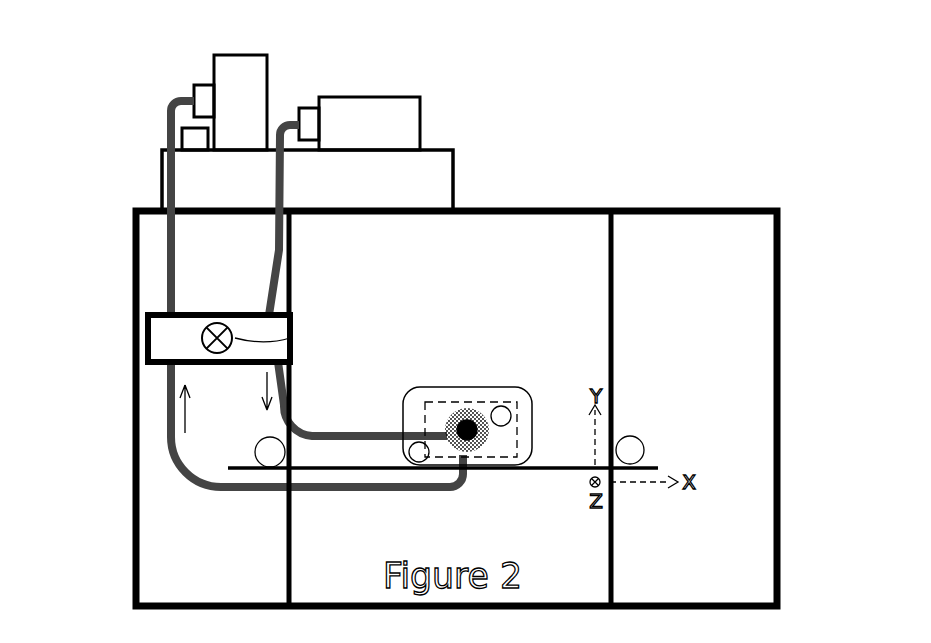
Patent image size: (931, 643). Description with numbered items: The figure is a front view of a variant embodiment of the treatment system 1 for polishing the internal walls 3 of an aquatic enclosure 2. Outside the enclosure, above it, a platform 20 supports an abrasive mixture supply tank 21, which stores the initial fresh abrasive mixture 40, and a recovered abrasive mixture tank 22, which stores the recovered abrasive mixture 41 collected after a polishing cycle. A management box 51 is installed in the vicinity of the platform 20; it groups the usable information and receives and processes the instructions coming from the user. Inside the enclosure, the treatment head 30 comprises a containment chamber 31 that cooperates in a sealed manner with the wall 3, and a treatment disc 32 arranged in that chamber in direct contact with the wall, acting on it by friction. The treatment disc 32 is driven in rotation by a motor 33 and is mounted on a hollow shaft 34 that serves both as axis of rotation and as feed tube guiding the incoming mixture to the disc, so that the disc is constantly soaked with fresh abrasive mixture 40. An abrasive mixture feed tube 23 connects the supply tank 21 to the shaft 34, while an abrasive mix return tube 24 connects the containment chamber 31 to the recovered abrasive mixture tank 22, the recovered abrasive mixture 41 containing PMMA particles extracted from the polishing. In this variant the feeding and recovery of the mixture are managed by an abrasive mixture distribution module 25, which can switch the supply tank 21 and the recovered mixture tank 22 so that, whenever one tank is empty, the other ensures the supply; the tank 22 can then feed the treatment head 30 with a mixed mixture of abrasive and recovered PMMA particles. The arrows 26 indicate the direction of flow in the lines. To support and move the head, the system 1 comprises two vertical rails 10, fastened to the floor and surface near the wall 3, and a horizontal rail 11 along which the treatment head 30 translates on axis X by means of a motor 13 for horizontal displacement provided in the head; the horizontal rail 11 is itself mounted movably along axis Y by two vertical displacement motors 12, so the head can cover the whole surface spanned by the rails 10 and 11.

The treatment system 1 is at (115, 198).
The aquatic enclosure 2 is at (768, 197).
The internal wall 3 is at (514, 283).
The vertical rail 10 is at (614, 312).
The horizontal rail 11 is at (543, 472).
The vertical displacement motor 12 is at (270, 452).
The motor for horizontal displacement 13 is at (419, 452).
The platform 20 is at (417, 183).
The abrasive mixture supply tank 21 is at (373, 123).
The recovered abrasive mixture tank 22 is at (240, 98).
The abrasive mixture feed tube 23 is at (358, 280).
The abrasive mix return tube 24 is at (256, 294).
The abrasive mixture distribution module 25 is at (292, 328).
The flow direction 26 is at (263, 395).
The treatment head 30 is at (393, 422).
The containment chamber 31 is at (438, 415).
The treatment disc 32 is at (465, 418).
The motor of the treatment disc 33 is at (502, 407).
The hollow shaft 34 is at (482, 430).
The fresh abrasive mixture 40 is at (278, 254).
The recovered abrasive mixture 41 is at (168, 257).
The management box 51 is at (198, 140).